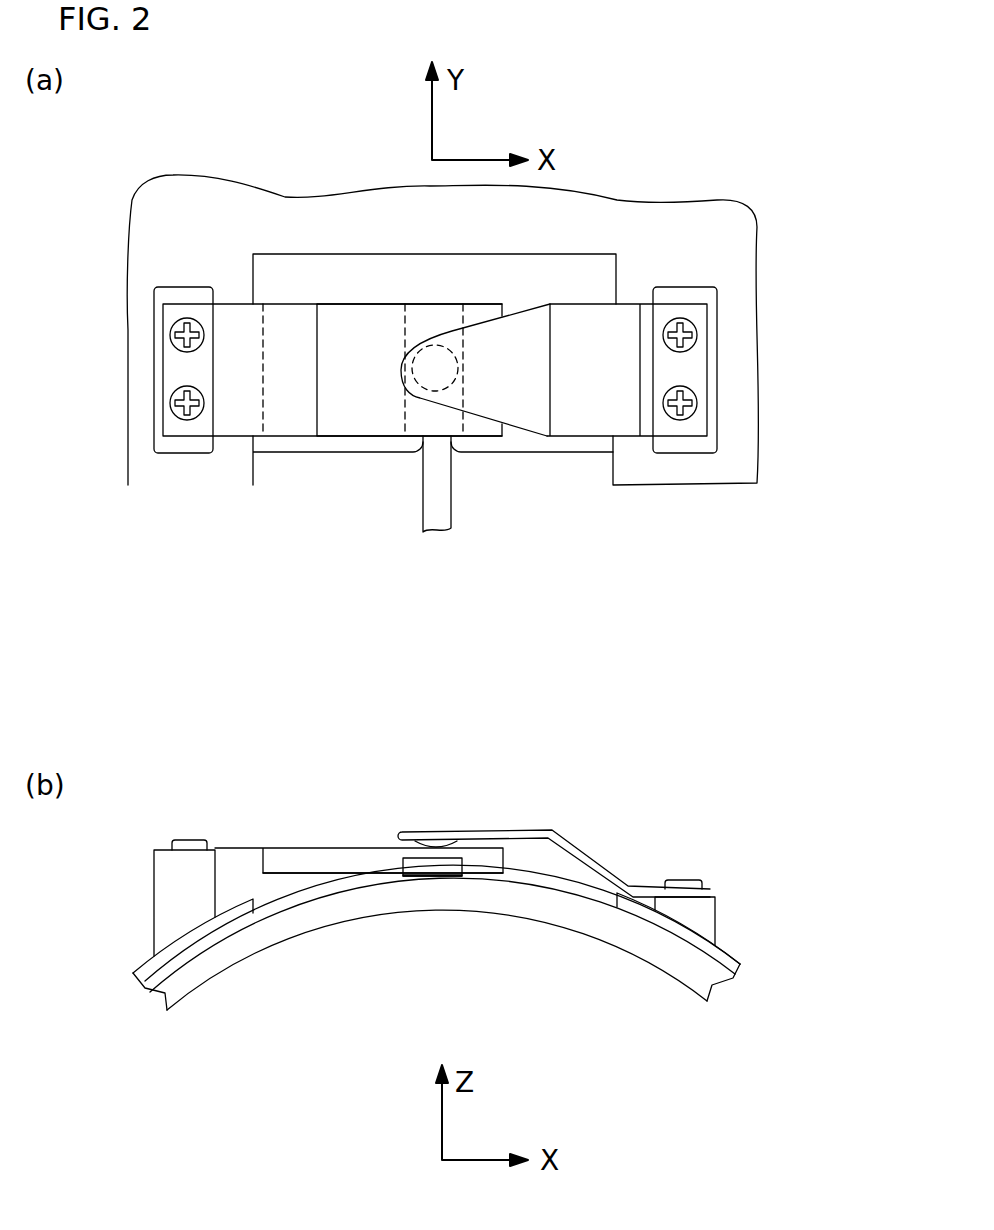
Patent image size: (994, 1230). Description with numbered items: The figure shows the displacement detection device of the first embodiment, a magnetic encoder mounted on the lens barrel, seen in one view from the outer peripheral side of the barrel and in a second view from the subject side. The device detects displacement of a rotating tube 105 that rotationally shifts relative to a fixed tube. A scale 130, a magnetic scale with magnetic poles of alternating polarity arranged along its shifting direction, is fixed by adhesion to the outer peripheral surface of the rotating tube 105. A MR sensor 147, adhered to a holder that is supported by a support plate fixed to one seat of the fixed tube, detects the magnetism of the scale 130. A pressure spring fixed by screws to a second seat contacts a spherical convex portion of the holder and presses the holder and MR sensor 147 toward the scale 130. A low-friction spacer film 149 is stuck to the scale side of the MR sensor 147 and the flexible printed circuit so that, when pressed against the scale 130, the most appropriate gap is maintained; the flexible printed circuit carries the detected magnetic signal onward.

The rotating tube 105 is at (280, 932).
The scale 130 is at (570, 902).
The MR sensor 147 is at (457, 860).
The spacer film 149 is at (457, 876).